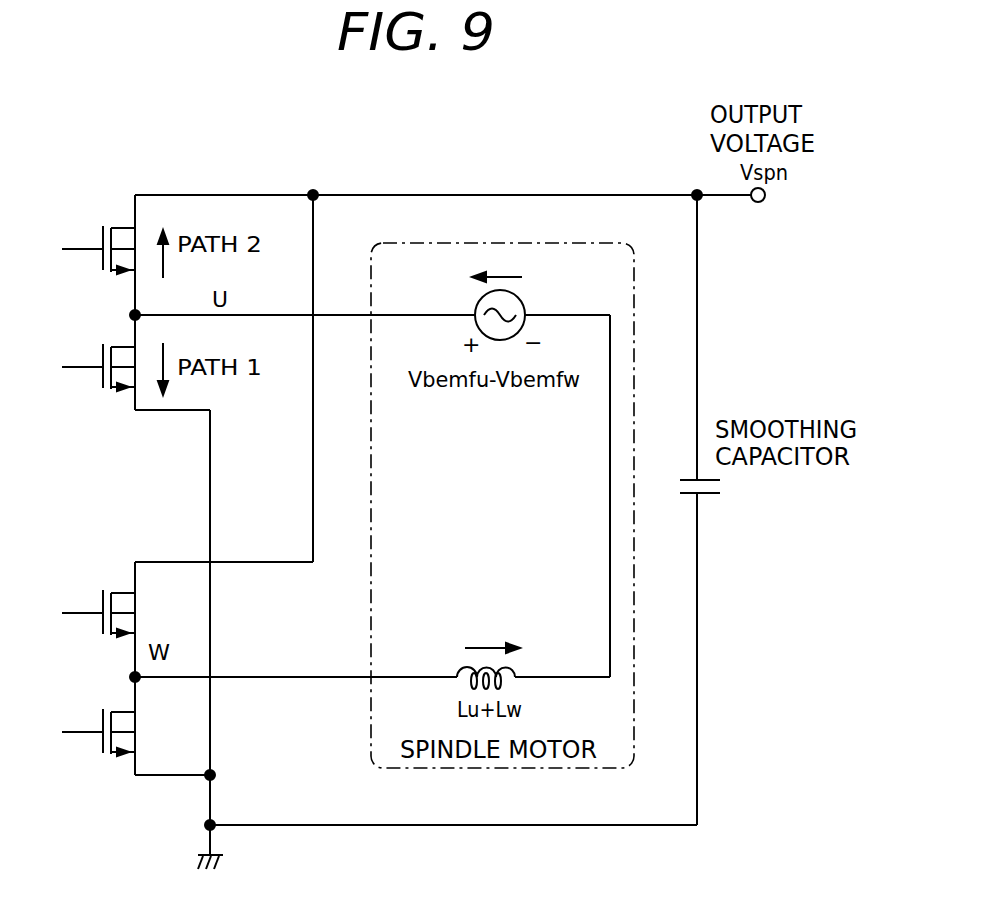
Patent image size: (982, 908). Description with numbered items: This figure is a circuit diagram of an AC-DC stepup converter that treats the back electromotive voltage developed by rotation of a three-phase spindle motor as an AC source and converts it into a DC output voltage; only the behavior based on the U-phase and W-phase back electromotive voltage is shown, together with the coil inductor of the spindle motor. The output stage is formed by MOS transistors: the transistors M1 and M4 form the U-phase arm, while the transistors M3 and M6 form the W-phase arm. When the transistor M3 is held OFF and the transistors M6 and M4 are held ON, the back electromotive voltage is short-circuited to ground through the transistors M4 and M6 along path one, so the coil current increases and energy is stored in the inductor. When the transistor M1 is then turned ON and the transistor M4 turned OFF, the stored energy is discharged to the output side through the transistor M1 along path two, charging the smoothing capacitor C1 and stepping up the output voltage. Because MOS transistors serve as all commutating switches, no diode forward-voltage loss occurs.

The output transistor M1 is at (91, 249).
The output transistor M4 is at (91, 365).
The output transistor M3 is at (88, 616).
The output transistor M6 is at (88, 735).
The smoothing capacitor C1 is at (716, 493).